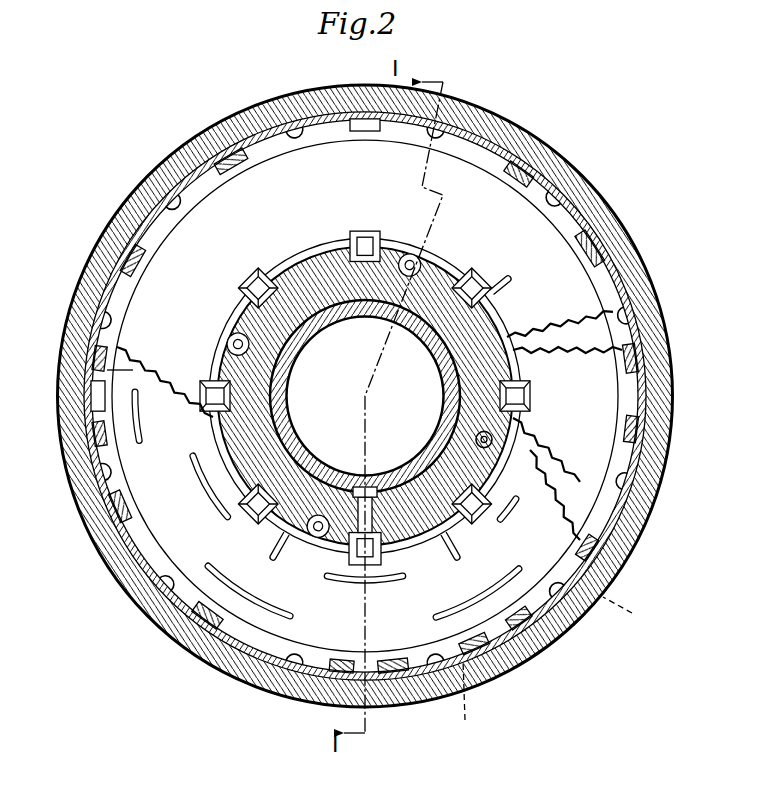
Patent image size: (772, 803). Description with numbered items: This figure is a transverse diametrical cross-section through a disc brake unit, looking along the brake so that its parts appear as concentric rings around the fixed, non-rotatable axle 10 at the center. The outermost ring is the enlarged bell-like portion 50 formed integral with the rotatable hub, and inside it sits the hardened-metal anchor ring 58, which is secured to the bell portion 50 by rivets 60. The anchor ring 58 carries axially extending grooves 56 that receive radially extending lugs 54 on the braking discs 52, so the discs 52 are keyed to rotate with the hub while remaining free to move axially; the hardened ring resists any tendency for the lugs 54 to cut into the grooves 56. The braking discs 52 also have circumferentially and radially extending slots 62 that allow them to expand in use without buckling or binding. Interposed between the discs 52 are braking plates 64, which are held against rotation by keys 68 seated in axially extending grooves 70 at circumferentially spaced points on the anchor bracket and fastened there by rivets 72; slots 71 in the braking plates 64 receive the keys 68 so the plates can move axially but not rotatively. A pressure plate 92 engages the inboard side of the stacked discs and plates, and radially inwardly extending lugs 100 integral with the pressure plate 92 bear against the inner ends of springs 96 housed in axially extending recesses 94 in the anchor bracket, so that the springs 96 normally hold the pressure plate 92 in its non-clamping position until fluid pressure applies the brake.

The axle 10 is at (440, 357).
The bell-like portion 50 is at (513, 657).
The braking discs 52 is at (327, 627).
The lugs 54 is at (233, 627).
The grooves 56 is at (373, 667).
The anchor ring 58 is at (405, 657).
The rivets 60 is at (561, 668).
The slots 62 is at (200, 483).
The braking plates 64 is at (552, 283).
The keys 68 is at (495, 290).
The grooves 70 is at (267, 273).
The slots 71 is at (378, 245).
The rivets 72 is at (212, 375).
The pressure plate 92 is at (587, 468).
The recesses 94 is at (410, 267).
The springs 96 is at (428, 260).
The lugs 100 is at (505, 433).